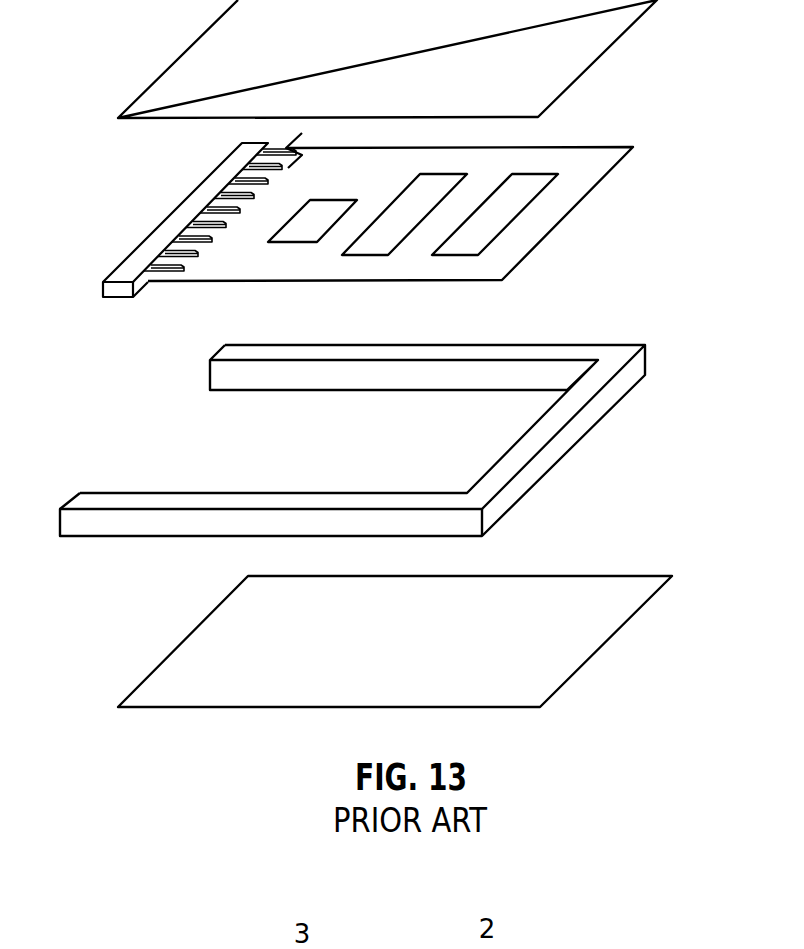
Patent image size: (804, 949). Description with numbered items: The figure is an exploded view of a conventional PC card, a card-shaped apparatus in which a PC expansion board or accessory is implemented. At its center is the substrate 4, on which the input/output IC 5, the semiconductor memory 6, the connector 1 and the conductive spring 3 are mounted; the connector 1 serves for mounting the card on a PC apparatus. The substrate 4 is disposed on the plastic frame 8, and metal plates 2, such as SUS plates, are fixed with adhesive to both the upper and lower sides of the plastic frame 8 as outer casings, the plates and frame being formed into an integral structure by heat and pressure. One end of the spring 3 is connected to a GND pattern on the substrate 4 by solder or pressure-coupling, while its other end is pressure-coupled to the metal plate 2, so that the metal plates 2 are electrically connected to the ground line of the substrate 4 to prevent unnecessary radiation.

The connector 1 is at (142, 240).
The metal plate 2 is at (605, 37).
The conductive spring 3 is at (303, 133).
The substrate 4 is at (583, 190).
The input/output IC 5 is at (302, 230).
The semiconductor memory 6 is at (373, 248).
The plastic frame 8 is at (560, 413).